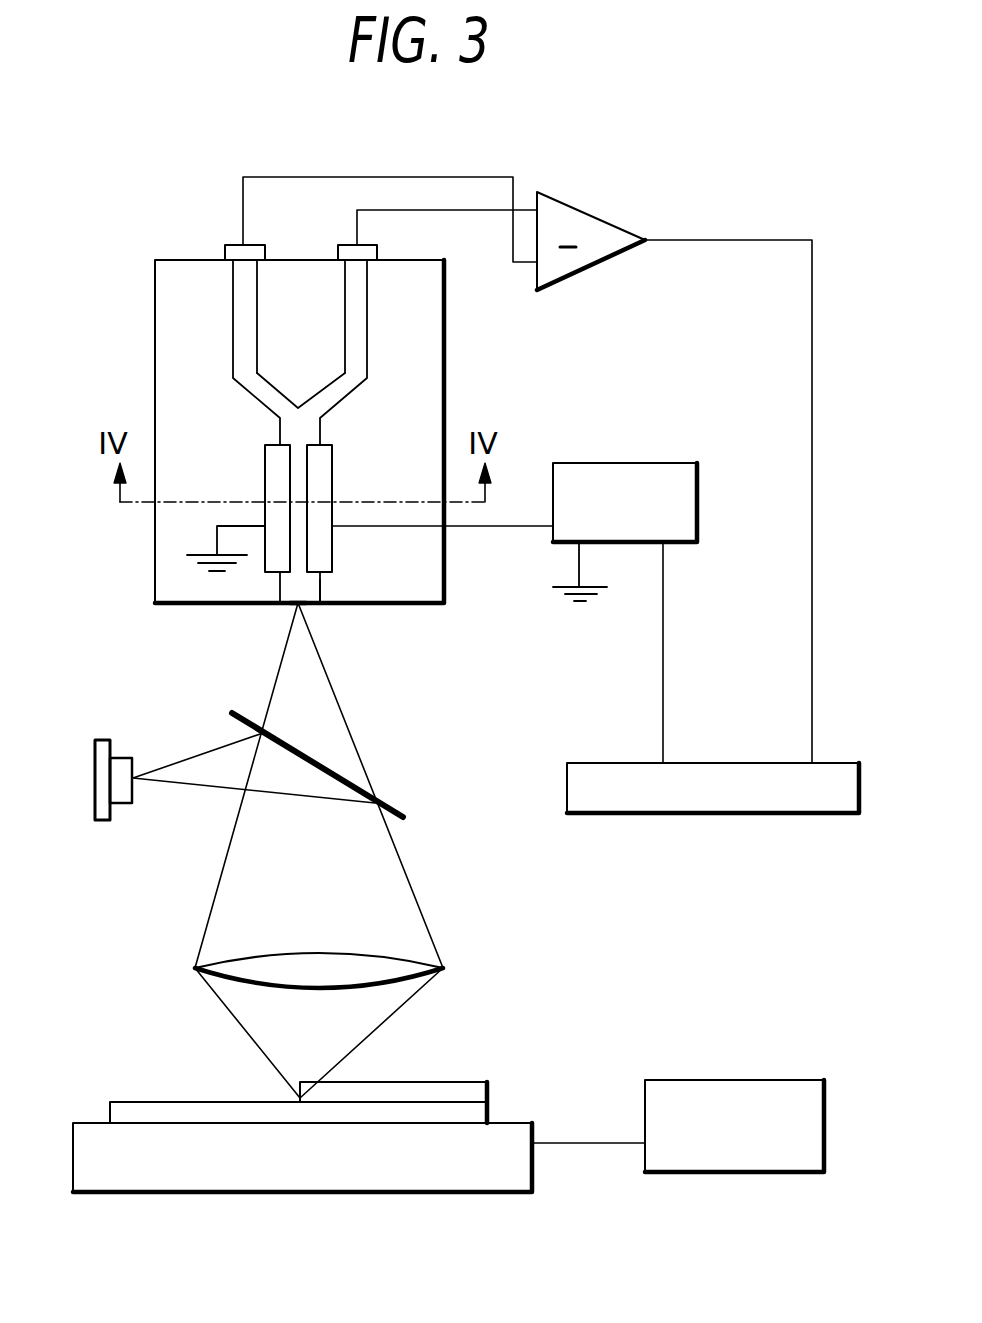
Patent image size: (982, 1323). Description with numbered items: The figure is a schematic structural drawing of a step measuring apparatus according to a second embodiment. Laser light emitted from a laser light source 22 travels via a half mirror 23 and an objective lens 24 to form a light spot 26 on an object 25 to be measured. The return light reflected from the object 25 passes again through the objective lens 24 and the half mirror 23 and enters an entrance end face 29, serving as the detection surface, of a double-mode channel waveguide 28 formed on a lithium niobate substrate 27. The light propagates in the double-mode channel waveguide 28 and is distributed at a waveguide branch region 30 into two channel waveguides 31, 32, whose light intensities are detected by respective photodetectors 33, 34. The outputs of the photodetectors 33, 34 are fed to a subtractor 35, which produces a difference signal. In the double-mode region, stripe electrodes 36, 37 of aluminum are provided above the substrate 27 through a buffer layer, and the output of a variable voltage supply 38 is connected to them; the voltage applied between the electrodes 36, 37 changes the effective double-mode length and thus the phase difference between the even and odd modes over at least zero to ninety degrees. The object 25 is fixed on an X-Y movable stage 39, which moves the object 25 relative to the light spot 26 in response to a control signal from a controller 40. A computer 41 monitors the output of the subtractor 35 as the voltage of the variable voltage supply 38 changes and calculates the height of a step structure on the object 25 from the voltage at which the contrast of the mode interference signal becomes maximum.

The laser light source 22 is at (103, 745).
The half mirror 23 is at (397, 807).
The objective lens 24 is at (197, 967).
The object 25 is at (178, 1105).
The light spot 26 is at (293, 1097).
The substrate 27 is at (165, 580).
The double-mode channel waveguide 28 is at (315, 583).
The entrance end face 29 is at (290, 607).
The waveguide branch region 30 is at (296, 418).
The channel waveguide 31 is at (248, 347).
The channel waveguide 32 is at (363, 328).
The photodetector 33 is at (238, 250).
The photodetector 34 is at (352, 248).
The subtractor 35 is at (610, 237).
The electrode 36 is at (265, 472).
The electrode 37 is at (333, 478).
The variable voltage supply 38 is at (610, 478).
The X-Y movable stage 39 is at (472, 1178).
The controller 40 is at (780, 1088).
The computer 41 is at (823, 768).